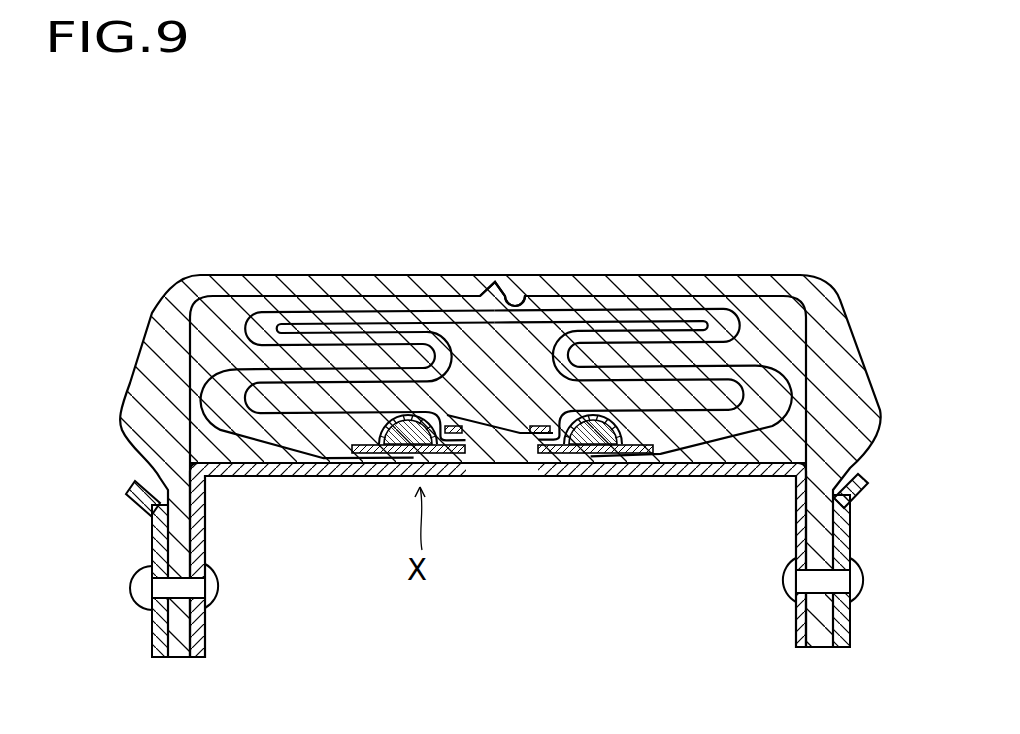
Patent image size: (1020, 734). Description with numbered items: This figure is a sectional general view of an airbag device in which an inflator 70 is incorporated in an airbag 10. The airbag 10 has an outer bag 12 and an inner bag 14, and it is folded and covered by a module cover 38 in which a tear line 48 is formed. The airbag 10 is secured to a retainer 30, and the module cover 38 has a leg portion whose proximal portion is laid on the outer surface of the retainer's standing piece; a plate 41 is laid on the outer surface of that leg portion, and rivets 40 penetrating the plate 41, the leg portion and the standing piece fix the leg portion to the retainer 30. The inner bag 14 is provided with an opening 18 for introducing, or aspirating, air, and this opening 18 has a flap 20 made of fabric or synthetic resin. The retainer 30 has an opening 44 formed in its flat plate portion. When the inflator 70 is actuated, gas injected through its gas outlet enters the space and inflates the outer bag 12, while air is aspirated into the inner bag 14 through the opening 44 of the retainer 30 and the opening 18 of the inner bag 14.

The airbag 10 is at (743, 317).
The outer bag 12 is at (412, 313).
The inner bag 14 is at (450, 322).
The opening 18 is at (468, 442).
The flap 20 is at (493, 425).
The retainer 30 is at (740, 477).
The module cover 38 is at (675, 275).
The rivets 40 is at (220, 597).
The plate 41 is at (152, 647).
The opening 44 is at (517, 474).
The tear line 48 is at (523, 295).
The inflator 70 is at (590, 452).